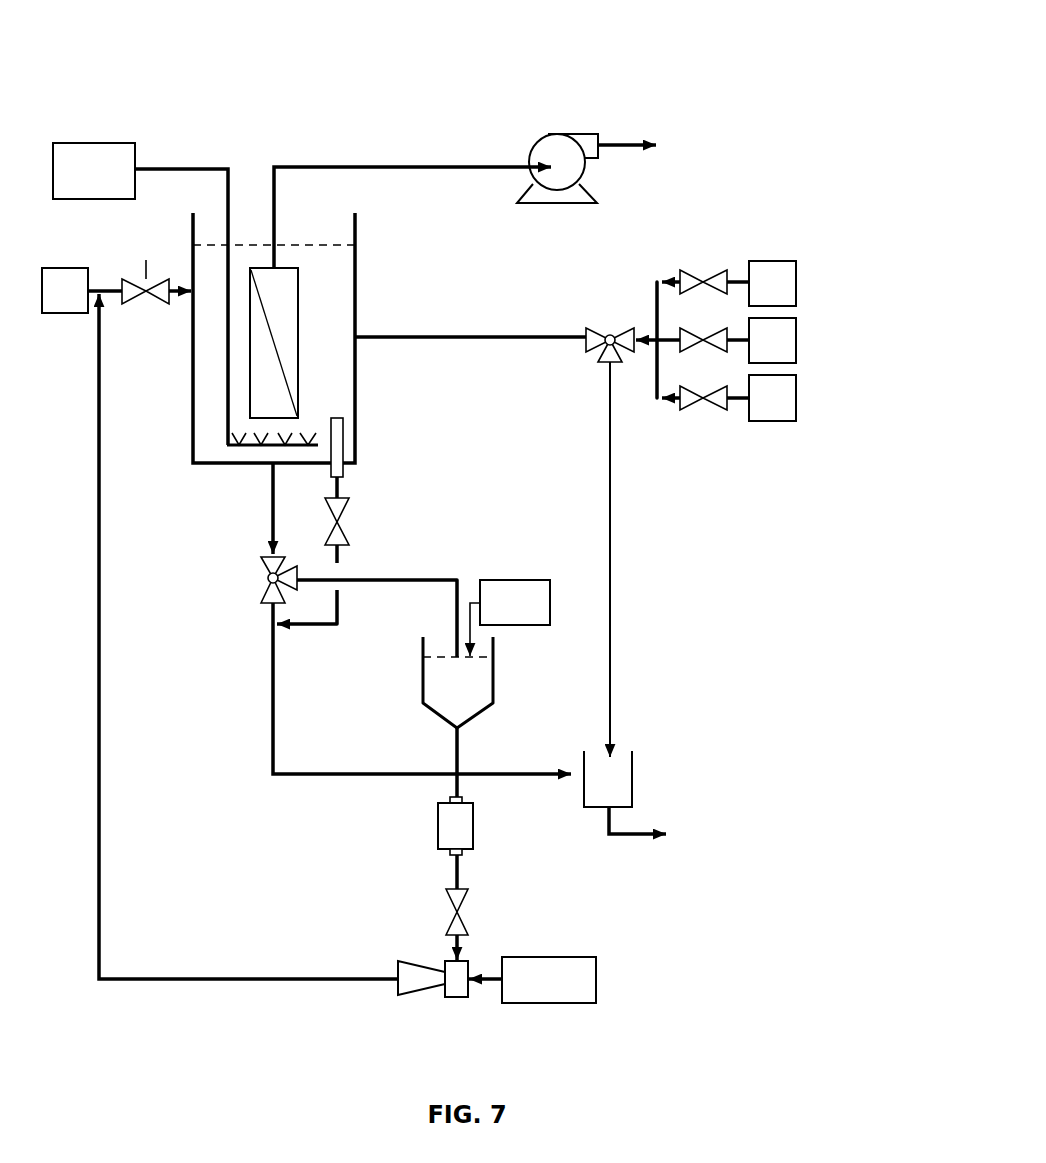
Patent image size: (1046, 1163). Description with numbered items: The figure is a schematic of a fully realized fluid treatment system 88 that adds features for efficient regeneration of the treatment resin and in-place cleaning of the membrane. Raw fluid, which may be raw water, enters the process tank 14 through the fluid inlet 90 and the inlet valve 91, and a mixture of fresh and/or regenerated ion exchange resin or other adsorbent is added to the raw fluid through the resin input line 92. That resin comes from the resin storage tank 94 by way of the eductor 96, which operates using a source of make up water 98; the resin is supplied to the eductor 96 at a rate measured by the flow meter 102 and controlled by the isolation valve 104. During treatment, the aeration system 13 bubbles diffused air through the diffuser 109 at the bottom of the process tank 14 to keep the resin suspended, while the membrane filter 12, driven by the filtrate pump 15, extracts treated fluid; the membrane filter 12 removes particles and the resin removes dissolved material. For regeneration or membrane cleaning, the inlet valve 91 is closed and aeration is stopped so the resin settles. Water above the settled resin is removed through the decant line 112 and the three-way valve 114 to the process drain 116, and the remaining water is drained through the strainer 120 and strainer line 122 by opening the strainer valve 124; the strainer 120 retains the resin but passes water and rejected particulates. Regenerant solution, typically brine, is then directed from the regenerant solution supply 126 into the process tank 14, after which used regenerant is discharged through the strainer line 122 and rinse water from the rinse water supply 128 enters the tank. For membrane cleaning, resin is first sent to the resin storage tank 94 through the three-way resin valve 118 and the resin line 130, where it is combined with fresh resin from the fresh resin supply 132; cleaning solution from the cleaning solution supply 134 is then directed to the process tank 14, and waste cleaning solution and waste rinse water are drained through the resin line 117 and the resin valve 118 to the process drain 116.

The fluid treatment system 88 is at (719, 64).
The aeration system 13 is at (140, 267).
The filtrate pump 15 is at (564, 134).
The process tank 14 is at (192, 372).
The membrane filter 12 is at (298, 291).
The diffuser 109 is at (227, 445).
The strainer 120 is at (337, 418).
The fluid inlet 90 is at (77, 320).
The inlet valve 91 is at (156, 269).
The resin input line 92 is at (99, 669).
The decant line 112 is at (458, 337).
The 3-way valve 114 is at (610, 335).
The regenerant solution supply 126 is at (795, 283).
The rinse water supply 128 is at (796, 340).
The cleaning solution supply 134 is at (780, 399).
The resin line 117 is at (273, 498).
The 3-way resin valve 118 is at (262, 578).
The strainer line 122 is at (307, 628).
The strainer valve 124 is at (350, 522).
The resin line 130 is at (457, 614).
The fresh resin supply 132 is at (513, 590).
The resin storage tank 94 is at (493, 683).
The flow meter 102 is at (473, 827).
The isolation valve 104 is at (468, 912).
The eductor 96 is at (421, 993).
The source of make up water 98 is at (575, 981).
The process drain 116 is at (662, 816).